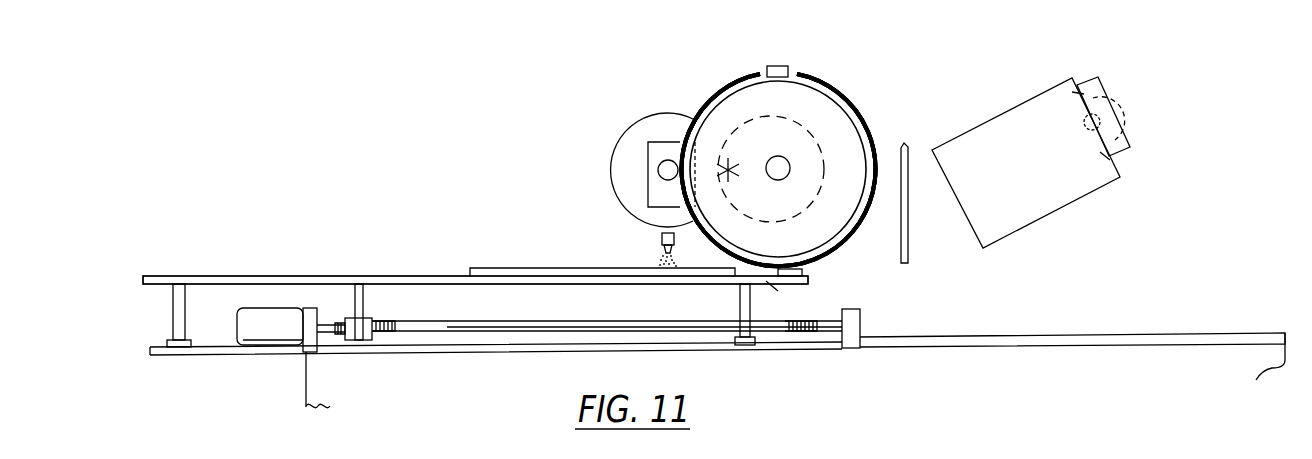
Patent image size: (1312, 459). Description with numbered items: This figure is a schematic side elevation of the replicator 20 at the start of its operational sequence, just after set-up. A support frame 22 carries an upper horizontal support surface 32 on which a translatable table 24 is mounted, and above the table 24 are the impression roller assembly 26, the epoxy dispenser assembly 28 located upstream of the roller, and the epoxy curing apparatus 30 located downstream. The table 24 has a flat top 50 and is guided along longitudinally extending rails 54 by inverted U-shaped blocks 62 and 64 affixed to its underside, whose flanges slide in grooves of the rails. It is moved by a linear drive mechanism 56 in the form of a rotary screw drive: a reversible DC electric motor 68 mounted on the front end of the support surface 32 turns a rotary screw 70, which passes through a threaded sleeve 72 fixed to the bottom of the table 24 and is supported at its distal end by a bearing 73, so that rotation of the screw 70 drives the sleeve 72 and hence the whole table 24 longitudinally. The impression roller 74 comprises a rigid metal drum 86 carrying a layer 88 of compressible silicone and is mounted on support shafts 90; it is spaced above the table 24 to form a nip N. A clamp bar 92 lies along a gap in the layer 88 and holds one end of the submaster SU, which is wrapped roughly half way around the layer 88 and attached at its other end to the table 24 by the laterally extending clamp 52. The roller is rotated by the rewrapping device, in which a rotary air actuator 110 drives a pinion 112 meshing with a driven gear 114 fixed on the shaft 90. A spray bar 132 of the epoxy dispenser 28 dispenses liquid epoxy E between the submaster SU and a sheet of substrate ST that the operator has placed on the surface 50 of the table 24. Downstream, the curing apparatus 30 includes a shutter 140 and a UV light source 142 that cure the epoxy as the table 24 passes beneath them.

The replicator 20 is at (468, 150).
The support frame 22 is at (298, 403).
The translatable table 24 is at (162, 270).
The impression roller assembly 26 is at (765, 60).
The epoxy dispenser assembly 28 is at (660, 234).
The epoxy curing apparatus 30 is at (1043, 88).
The upper horizontal support surface 32 is at (1168, 312).
The flat top 50 is at (251, 276).
The clamp 52 is at (803, 274).
The rails 54 is at (1287, 298).
The linear drive mechanism 56 is at (233, 342).
The inverted U-shaped block 62 is at (172, 318).
The inverted U-shaped block 64 is at (739, 301).
The reversible DC electric motor 68 is at (272, 336).
The rotary screw 70 is at (500, 302).
The threaded sleeve 72 is at (374, 318).
The bearing 73 is at (862, 323).
The impression roller 74 is at (850, 249).
The drum 86 is at (838, 110).
The layer of compressible material 88 is at (845, 85).
The support shaft 90 is at (781, 157).
The clamp bar 92 is at (787, 63).
The rotary air actuator 110 is at (652, 145).
The pinion 112 is at (617, 146).
The driven gear 114 is at (768, 125).
The spray bar 132 is at (660, 251).
The shutter 140 is at (906, 142).
The UV light source 142 is at (1082, 186).
The liquid epoxy E is at (662, 262).
The nip N is at (781, 297).
The substrate ST is at (476, 268).
The submaster SU is at (750, 80).